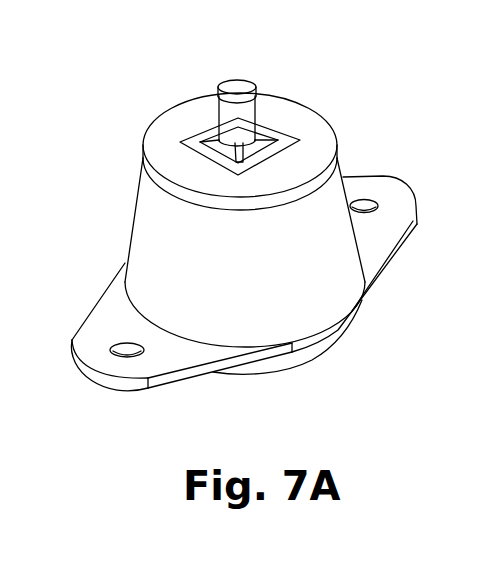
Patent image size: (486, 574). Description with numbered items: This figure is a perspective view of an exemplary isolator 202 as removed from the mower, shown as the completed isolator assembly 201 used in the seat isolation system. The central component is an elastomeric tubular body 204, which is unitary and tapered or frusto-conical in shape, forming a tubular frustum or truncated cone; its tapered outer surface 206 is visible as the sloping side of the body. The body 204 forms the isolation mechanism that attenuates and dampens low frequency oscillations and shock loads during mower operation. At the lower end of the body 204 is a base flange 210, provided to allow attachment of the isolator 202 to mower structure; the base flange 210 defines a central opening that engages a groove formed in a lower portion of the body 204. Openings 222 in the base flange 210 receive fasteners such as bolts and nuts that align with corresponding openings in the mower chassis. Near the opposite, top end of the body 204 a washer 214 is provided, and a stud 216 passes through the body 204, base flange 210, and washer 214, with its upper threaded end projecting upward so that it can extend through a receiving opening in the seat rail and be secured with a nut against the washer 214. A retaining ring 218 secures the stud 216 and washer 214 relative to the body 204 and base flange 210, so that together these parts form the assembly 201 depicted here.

The isolator assembly 201 is at (242, 223).
The isolator 202 is at (222, 240).
The elastomeric tubular body 204 is at (132, 214).
The tapered outer surface 206 is at (238, 285).
The base flange 210 is at (226, 284).
The washer 214 is at (163, 120).
The stud 216 is at (247, 80).
The retaining ring 218 is at (265, 128).
The openings 222 is at (128, 360).